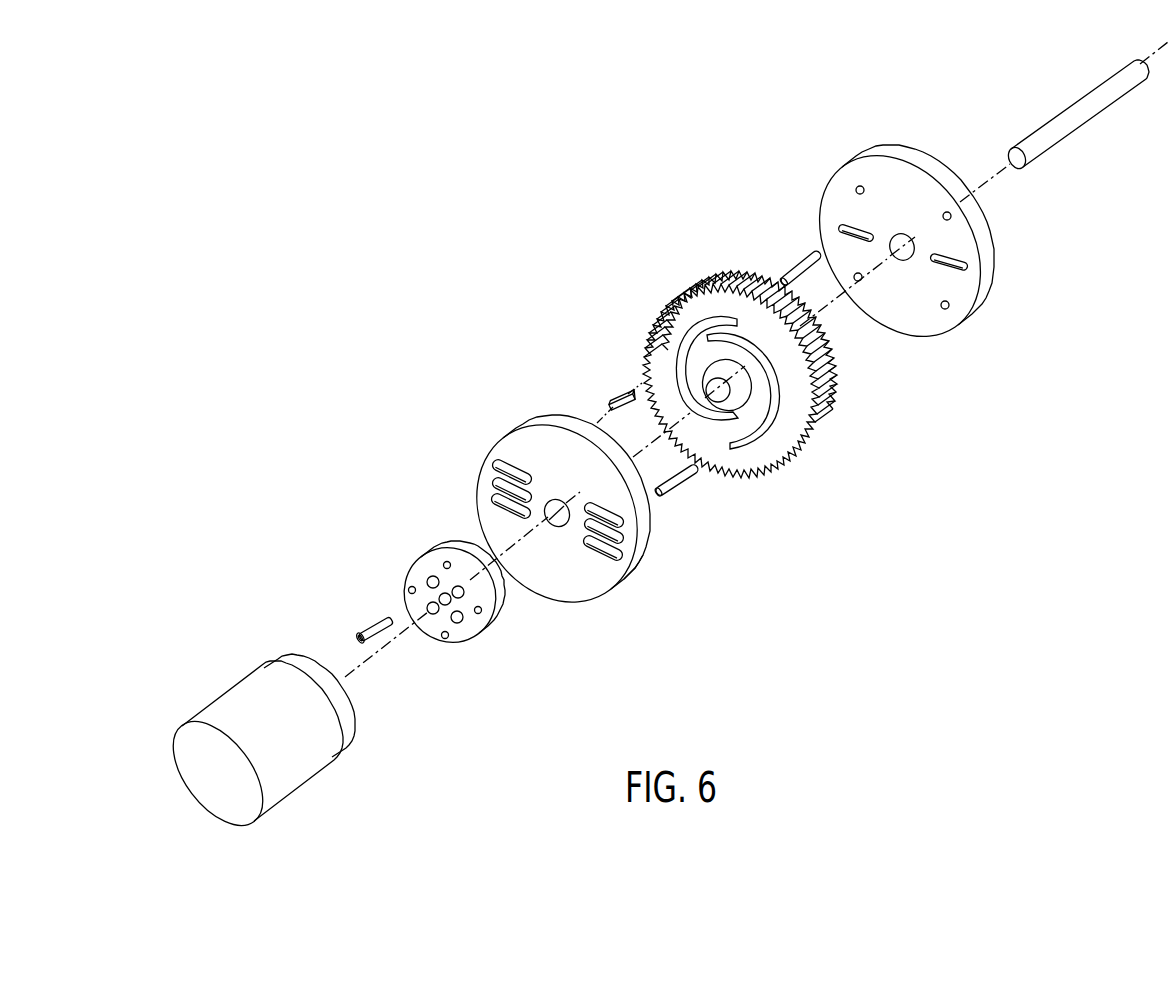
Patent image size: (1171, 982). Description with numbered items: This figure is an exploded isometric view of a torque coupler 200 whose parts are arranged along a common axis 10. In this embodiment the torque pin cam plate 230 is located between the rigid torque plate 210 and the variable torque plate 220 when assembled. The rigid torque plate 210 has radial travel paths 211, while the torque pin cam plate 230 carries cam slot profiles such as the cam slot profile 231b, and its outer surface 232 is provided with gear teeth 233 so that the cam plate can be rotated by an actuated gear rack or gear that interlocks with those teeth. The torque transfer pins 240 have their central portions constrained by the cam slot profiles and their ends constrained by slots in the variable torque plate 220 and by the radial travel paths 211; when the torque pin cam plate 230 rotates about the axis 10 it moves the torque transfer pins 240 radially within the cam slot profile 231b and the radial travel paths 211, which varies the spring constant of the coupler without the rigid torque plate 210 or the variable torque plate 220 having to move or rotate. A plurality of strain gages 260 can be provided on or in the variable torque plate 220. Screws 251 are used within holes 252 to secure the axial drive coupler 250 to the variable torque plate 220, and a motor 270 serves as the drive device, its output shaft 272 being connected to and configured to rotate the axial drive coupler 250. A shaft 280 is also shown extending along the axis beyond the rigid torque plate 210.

The torque coupler 200 is at (500, 206).
The axis 10 is at (650, 517).
The rigid torque plate 210 is at (908, 156).
The radial travel paths 211 is at (853, 230).
The variable torque plate 220 is at (578, 593).
The torque pin cam plate 230 is at (759, 386).
The cam slot profile 231b is at (743, 449).
The outer surface 232 is at (838, 400).
The gear teeth 233 is at (837, 360).
The torque transfer pins 240 is at (800, 263).
The axial drive coupler 250 is at (412, 578).
The screws 251 is at (378, 620).
The holes 252 is at (456, 586).
The strain gages 260 is at (623, 396).
The motor 270 is at (300, 770).
The output shaft 272 is at (345, 722).
The shaft 280 is at (1080, 118).